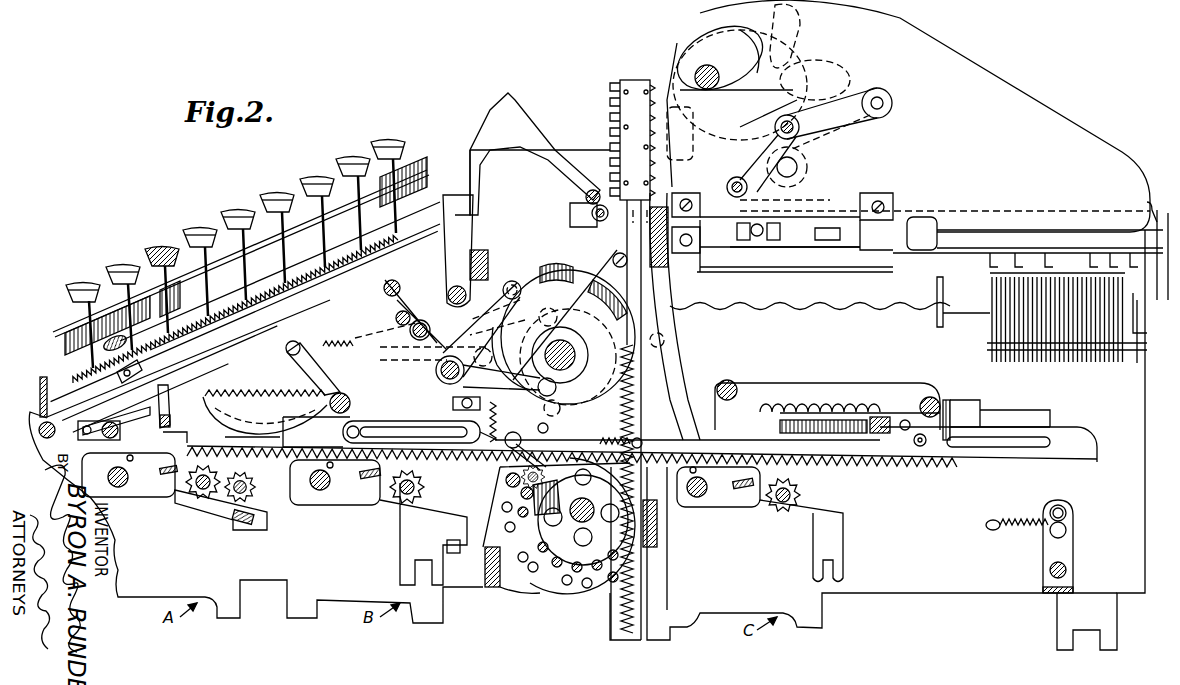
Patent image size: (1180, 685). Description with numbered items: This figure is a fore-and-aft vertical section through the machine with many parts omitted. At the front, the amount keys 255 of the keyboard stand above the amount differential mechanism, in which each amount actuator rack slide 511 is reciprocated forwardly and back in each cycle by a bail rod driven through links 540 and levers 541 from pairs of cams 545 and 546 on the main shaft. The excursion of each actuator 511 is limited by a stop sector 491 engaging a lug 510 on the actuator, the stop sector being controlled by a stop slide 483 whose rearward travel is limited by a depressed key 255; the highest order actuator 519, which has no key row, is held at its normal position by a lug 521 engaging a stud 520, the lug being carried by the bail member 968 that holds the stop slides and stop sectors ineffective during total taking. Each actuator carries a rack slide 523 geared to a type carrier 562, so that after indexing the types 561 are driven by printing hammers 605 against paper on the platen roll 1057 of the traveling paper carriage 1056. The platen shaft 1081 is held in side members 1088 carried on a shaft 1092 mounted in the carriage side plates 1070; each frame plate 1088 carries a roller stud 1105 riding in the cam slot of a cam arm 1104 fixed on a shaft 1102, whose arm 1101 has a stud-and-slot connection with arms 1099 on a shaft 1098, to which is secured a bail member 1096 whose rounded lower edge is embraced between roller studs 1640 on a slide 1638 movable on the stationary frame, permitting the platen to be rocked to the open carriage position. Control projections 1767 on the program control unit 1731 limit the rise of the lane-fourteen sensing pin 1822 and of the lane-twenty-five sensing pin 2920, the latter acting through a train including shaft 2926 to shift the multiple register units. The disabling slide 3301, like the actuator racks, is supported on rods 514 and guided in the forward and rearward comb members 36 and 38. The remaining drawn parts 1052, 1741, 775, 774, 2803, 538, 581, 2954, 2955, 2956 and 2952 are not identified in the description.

The amount keys 255 is at (303, 183).
The bail member 968 is at (143, 380).
The stud 520 is at (177, 427).
The stop sectors 491 is at (240, 423).
The lugs 510 is at (327, 410).
The stop slides 483 is at (267, 337).
The comb member 36 is at (383, 375).
The printing hammers 605 is at (553, 153).
The types 561 is at (610, 83).
The type carriers 562 is at (637, 307).
The levers 541 is at (667, 360).
The cams 546 is at (560, 273).
The platen roll 1057 is at (687, 30).
The shaft 1081 is at (700, 70).
The cover edge 1052 is at (660, 80).
The side members 1088 is at (787, 20).
The cam arms 1104 is at (848, 57).
The roller stud 1105 is at (797, 92).
The shafts 1102 is at (883, 103).
The arm 1101 is at (833, 123).
The arms 1099 is at (783, 143).
The shaft 1098 is at (737, 183).
The shaft 1092 is at (797, 170).
The carriage side plates 1070 is at (993, 83).
The traveling paper carriage 1056 is at (950, 40).
The bracket 1741 is at (923, 227).
The program control unit 1731 is at (1147, 202).
The control projections 1767 is at (1080, 240).
The sensing pin 1822 is at (1052, 370).
The sensing pin 2920 is at (1137, 363).
The slide 1638 is at (823, 247).
The roller studs 1640 is at (740, 233).
The bail member 1096 is at (757, 237).
The amount actuator rack slide 511 is at (1090, 437).
The slide 3301 is at (387, 420).
The cams 545 is at (487, 390).
The rack slide 523 is at (657, 513).
The gear 775 is at (213, 507).
The gear 774 is at (230, 510).
The amount actuator rack slide 519 is at (183, 463).
The lug 521 is at (173, 445).
The rods 514 is at (353, 433).
The pinion 2803 is at (413, 480).
The stud 538 is at (727, 380).
The links 540 is at (780, 387).
The stud 581 is at (887, 420).
The comb member 38 is at (953, 400).
The bracket 2954 is at (1060, 547).
The roller 2956 is at (1063, 513).
The spring 2955 is at (1013, 523).
The shaft 2926 is at (1050, 573).
The foot 2952 is at (1060, 593).